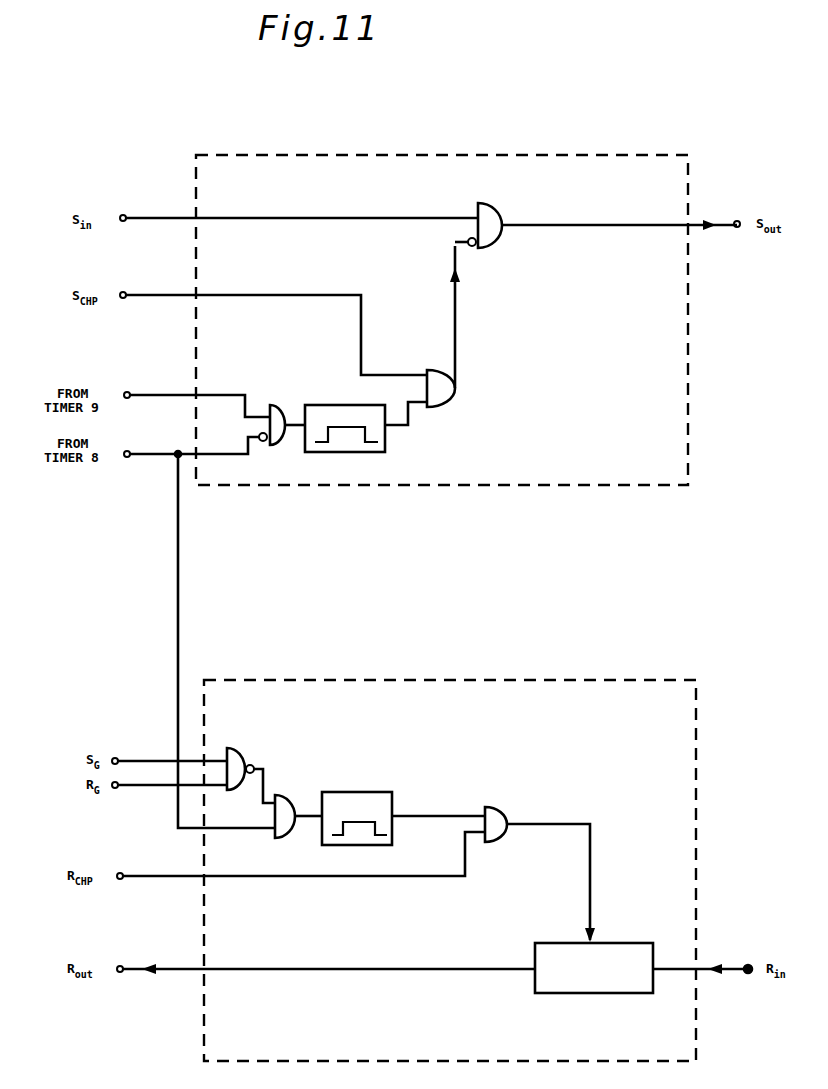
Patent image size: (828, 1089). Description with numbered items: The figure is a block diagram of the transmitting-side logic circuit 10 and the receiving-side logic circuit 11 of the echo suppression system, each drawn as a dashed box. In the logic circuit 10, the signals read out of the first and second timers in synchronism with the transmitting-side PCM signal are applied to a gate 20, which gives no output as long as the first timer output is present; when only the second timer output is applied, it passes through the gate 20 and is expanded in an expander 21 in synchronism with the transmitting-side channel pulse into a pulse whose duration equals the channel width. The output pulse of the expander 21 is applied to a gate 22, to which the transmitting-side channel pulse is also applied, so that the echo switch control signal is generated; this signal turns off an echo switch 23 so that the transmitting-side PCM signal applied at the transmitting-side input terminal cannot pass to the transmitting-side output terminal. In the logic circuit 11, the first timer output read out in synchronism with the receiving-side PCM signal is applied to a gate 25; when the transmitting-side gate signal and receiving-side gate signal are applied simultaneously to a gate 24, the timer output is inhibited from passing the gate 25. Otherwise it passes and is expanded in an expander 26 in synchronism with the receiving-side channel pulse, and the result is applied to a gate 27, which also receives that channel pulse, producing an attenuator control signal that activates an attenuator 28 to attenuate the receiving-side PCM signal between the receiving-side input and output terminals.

The logic circuit 10 is at (385, 156).
The logic circuit 11 is at (472, 681).
The gate 20 is at (278, 405).
The expander 21 is at (385, 450).
The gate 22 is at (447, 404).
The echo switch 23 is at (498, 219).
The gate 24 is at (240, 749).
The gate 25 is at (287, 795).
The expander 26 is at (350, 792).
The gate 27 is at (495, 808).
The attenuator 28 is at (535, 993).